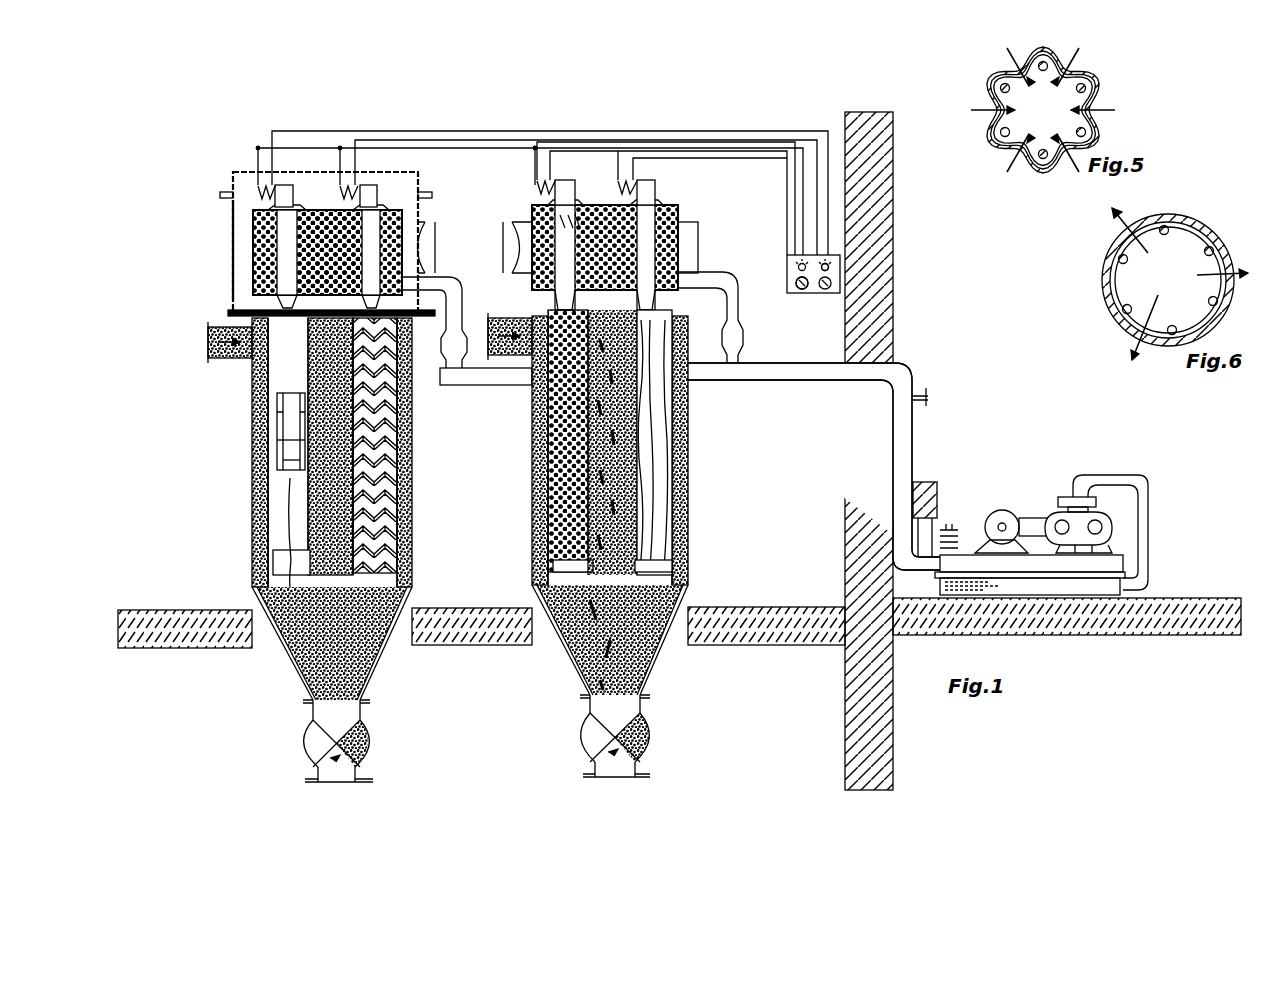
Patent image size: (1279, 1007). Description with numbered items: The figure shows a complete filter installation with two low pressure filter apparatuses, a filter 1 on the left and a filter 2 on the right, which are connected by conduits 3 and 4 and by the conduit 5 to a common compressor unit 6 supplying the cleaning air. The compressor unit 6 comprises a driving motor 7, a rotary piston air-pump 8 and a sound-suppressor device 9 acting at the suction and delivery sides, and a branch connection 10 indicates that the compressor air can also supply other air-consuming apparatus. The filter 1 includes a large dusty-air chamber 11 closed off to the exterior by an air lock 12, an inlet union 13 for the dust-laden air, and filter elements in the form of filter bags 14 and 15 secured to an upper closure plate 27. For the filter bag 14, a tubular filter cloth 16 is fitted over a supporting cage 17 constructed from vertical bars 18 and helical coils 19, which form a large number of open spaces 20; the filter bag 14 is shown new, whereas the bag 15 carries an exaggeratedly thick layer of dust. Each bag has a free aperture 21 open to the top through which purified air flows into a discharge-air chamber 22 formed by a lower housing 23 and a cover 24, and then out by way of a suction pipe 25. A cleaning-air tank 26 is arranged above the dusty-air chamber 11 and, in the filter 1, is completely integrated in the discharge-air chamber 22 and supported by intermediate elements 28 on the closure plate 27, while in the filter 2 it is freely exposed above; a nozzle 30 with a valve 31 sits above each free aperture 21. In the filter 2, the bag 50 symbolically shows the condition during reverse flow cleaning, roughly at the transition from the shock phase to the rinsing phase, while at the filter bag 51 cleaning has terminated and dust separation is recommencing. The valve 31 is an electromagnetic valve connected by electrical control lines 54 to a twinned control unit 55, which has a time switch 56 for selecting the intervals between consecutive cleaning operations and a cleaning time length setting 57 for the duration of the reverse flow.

The filter 1 is at (410, 450).
The filter 2 is at (686, 455).
The conduit 3 is at (462, 380).
The conduit 4 is at (733, 351).
The conduit 5 is at (822, 372).
The compressor unit 6 is at (1036, 560).
The driving motor 7 is at (998, 515).
The rotary piston air-pump 8 is at (1093, 515).
The sound-suppressor device 9 is at (1146, 525).
The branch connection 10 is at (927, 397).
The dusty-air chamber 11 is at (330, 490).
The air lock 12 is at (338, 745).
The inlet union 13 is at (230, 360).
The filter bag 14 is at (287, 483).
The filter bag 15 is at (383, 502).
The tubular filter cloth 16 is at (298, 391).
The supporting cage 17 is at (300, 460).
The vertical bars 18 is at (307, 424).
The helical coils 19 is at (300, 414).
The open spaces 20 is at (298, 463).
The free aperture 21 is at (645, 310).
The discharge-air chamber 22 is at (248, 308).
The lower housing 23 is at (233, 247).
The cover 24 is at (235, 186).
The suction pipe 25 is at (515, 243).
The cleaning-air tank 26 is at (253, 262).
The closure plate 27 is at (330, 446).
The intermediate elements 28 is at (395, 302).
The nozzle 30 is at (296, 262).
The valve 31 is at (293, 196).
The filter bag 50 is at (562, 448).
The filter bag 51 is at (660, 505).
The electrical control lines 54 is at (447, 129).
The control unit 55 is at (838, 286).
The time switch 56 is at (801, 296).
The cleaning time length setting 57 is at (838, 268).